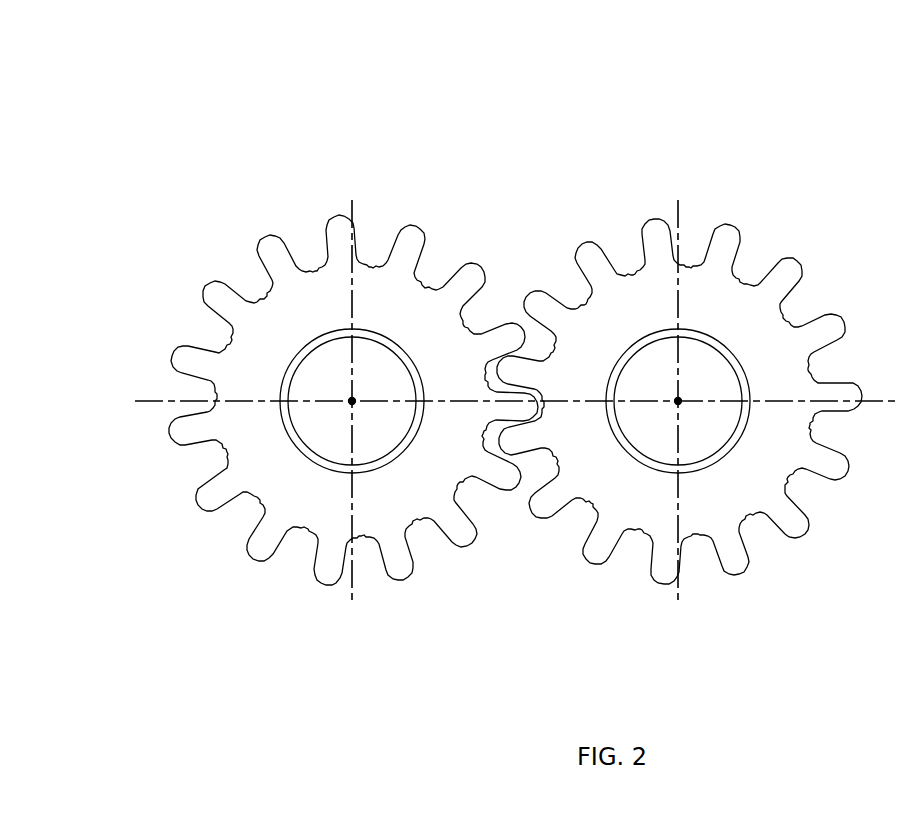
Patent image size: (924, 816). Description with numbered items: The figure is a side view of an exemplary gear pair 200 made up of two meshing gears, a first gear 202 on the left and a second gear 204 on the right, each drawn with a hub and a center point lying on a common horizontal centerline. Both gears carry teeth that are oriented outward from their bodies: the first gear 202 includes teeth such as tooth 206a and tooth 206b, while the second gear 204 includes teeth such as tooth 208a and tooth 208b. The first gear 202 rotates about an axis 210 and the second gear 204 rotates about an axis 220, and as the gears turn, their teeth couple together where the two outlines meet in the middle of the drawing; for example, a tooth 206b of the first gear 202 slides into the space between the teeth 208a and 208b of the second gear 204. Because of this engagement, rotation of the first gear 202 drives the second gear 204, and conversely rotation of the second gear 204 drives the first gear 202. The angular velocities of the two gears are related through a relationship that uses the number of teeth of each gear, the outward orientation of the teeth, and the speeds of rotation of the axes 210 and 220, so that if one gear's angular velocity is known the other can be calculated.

The gear pair 200 is at (218, 78).
The gear 202 is at (248, 212).
The gear 204 is at (784, 210).
The tooth 206a is at (510, 345).
The tooth 206b is at (510, 408).
The tooth 208a is at (522, 372).
The tooth 208b is at (522, 432).
The axis 210 is at (350, 403).
The axis 220 is at (678, 401).